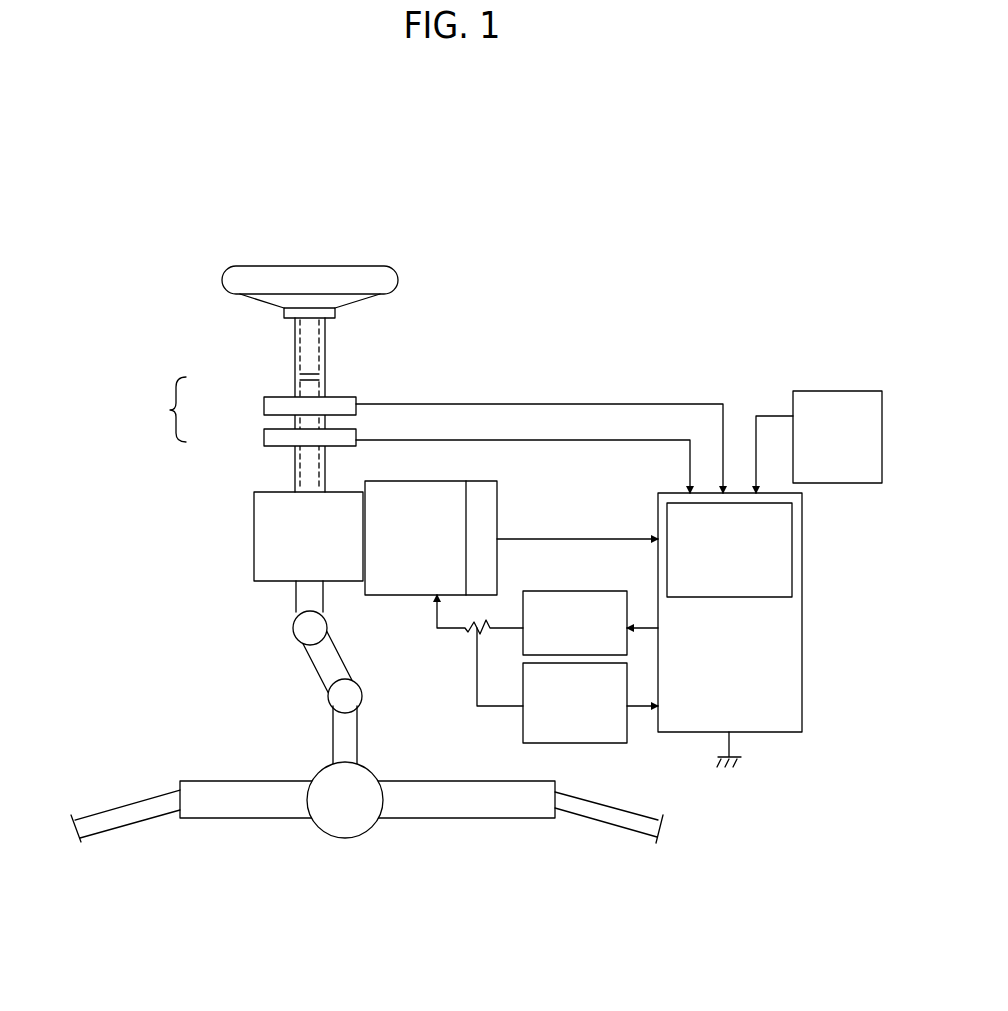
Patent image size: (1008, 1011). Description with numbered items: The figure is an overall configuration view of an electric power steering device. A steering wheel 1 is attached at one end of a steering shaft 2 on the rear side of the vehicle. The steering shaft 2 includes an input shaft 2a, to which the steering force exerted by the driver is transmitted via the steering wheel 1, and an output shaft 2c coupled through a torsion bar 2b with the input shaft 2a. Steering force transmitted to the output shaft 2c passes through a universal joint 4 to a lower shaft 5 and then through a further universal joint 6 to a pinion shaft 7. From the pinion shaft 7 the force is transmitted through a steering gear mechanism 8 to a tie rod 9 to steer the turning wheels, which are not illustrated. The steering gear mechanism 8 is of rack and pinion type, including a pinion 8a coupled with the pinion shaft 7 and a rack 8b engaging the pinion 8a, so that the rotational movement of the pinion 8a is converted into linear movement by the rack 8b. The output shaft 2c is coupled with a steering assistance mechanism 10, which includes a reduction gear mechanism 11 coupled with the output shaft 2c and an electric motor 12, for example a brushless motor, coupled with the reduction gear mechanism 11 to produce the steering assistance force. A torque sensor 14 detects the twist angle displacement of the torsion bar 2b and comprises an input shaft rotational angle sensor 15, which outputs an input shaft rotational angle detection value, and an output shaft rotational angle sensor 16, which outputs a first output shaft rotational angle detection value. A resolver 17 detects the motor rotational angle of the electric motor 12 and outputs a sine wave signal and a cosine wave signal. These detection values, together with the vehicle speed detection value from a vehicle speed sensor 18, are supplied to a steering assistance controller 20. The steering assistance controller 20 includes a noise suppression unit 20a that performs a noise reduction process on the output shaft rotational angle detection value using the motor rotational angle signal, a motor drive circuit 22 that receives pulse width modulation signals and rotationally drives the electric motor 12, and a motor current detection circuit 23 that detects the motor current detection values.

The steering wheel 1 is at (318, 268).
The steering shaft 2 is at (306, 464).
The input shaft 2a is at (325, 345).
The torsion bar 2b is at (325, 422).
The output shaft 2c is at (302, 605).
The universal joint 4 is at (293, 625).
The lower shaft 5 is at (317, 668).
The universal joint 6 is at (330, 693).
The pinion shaft 7 is at (360, 727).
The steering gear mechanism 8 is at (367, 776).
The pinion 8a is at (327, 768).
The rack 8b is at (453, 783).
The tie rod 9 is at (140, 802).
The steering assistance mechanism 10 is at (202, 478).
The reduction gear mechanism 11 is at (255, 553).
The electric motor 12 is at (412, 595).
The torque sensor 14 is at (252, 411).
The input shaft rotational angle sensor 15 is at (264, 403).
The output shaft rotational angle sensor 16 is at (264, 437).
The resolver 17 is at (497, 492).
The vehicle speed sensor 18 is at (793, 391).
The steering assistance controller 20 is at (802, 530).
The noise suppression unit 20a is at (792, 570).
The motor drive circuit 22 is at (570, 590).
The motor current detection circuit 23 is at (568, 743).